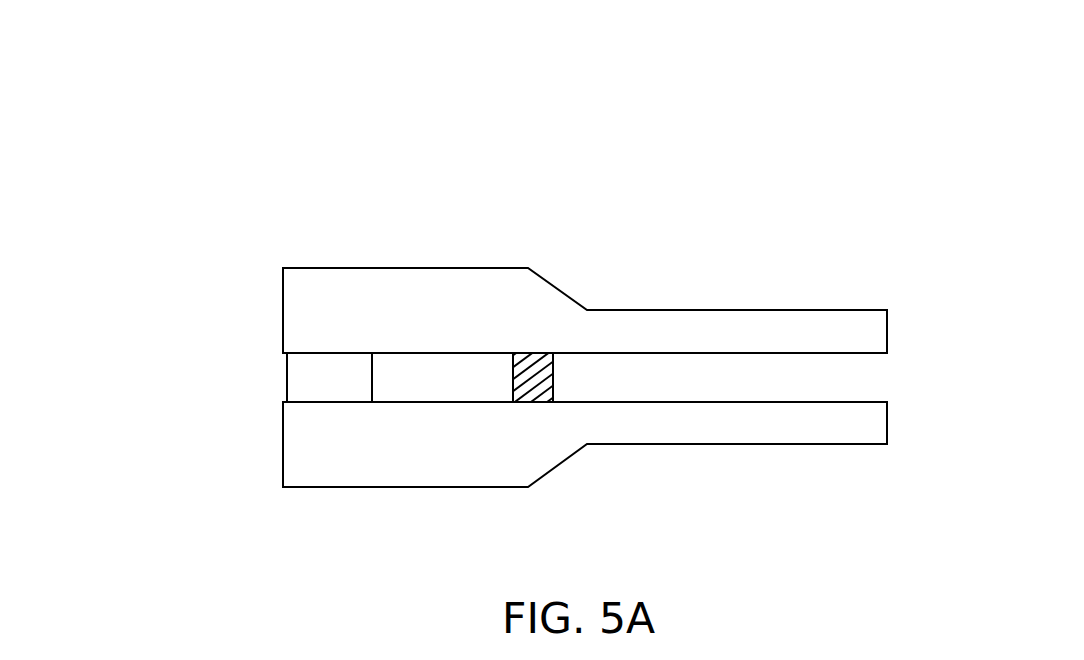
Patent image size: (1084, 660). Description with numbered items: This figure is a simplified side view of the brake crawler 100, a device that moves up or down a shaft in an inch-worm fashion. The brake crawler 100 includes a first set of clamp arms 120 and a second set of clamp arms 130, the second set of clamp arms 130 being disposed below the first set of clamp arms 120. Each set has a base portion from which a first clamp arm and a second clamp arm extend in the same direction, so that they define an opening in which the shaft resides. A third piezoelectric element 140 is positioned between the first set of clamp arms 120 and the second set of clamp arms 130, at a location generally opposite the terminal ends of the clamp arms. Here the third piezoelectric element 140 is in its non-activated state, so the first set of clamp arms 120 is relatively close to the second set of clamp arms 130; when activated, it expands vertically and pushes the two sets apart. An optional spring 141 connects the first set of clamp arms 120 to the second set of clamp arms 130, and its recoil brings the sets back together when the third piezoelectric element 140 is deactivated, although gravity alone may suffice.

The brake crawler 100 is at (176, 234).
The first set of clamp arms 120 is at (388, 268).
The second set of clamp arms 130 is at (358, 487).
The third piezoelectric element 140 is at (287, 373).
The spring 141 is at (555, 383).